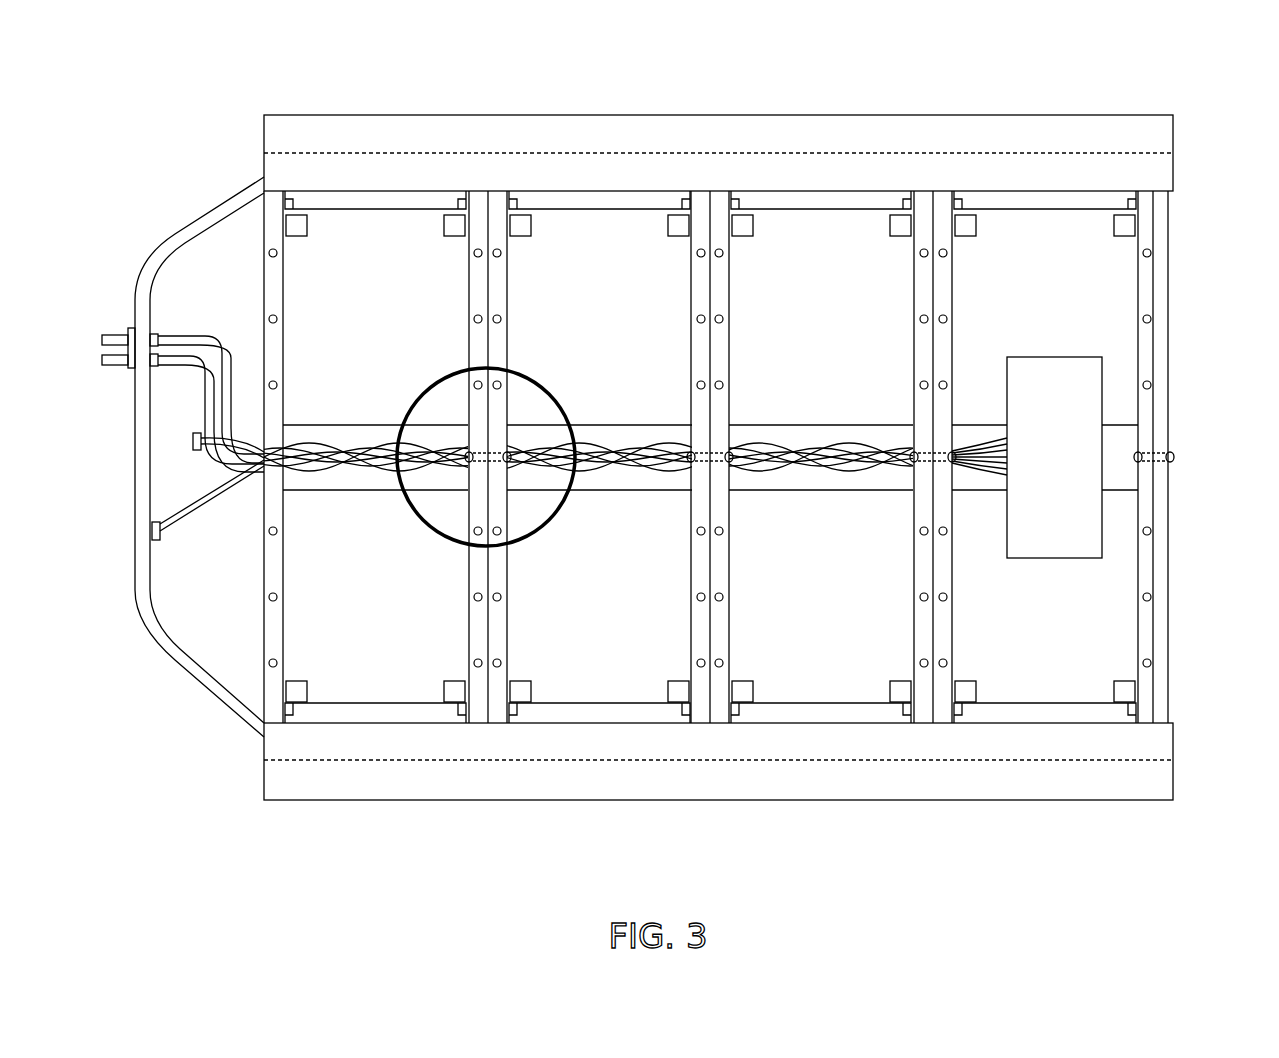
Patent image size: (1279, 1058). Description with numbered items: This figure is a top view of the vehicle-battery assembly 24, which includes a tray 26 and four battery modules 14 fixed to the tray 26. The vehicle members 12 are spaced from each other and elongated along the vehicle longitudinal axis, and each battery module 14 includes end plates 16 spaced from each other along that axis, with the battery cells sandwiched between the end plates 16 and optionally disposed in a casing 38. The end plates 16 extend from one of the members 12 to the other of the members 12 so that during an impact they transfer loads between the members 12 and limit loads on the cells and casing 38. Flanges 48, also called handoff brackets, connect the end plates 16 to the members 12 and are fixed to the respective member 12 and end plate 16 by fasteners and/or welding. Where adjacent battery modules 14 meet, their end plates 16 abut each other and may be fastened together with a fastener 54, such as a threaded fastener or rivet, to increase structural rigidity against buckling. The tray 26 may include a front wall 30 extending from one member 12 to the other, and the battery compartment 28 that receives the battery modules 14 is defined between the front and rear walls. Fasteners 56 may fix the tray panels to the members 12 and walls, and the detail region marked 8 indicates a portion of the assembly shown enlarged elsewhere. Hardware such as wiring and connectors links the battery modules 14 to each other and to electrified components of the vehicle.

The detail circle 8 is at (464, 543).
The member 12 is at (1075, 115).
The battery module 14 is at (365, 706).
The end plate 16 is at (275, 438).
The vehicle-battery assembly 24 is at (205, 822).
The tray 26 is at (1172, 265).
The battery compartment 28 is at (200, 600).
The front wall 30 is at (185, 683).
The casing 38 is at (367, 334).
The flange 48 is at (292, 191).
The fastener 54 is at (478, 455).
The fastener 56 is at (940, 258).